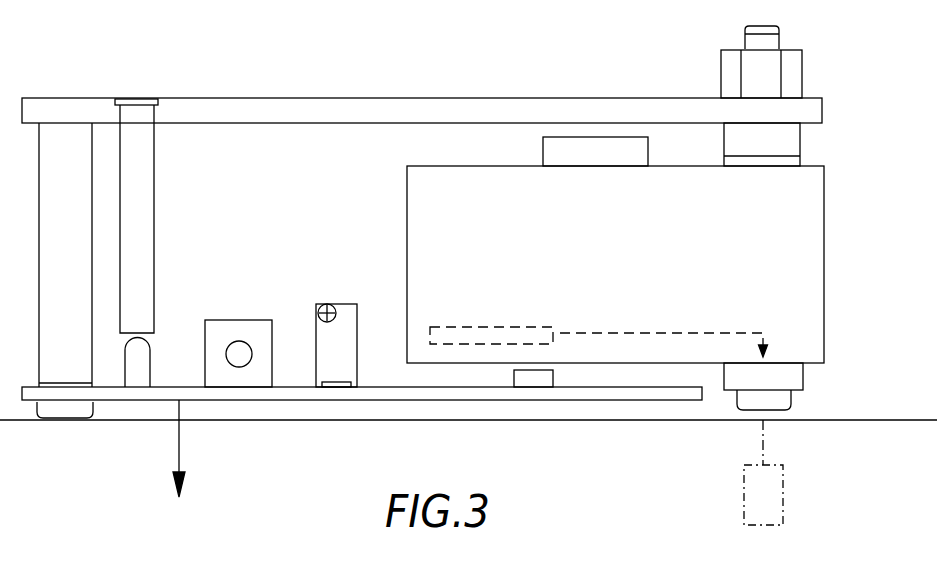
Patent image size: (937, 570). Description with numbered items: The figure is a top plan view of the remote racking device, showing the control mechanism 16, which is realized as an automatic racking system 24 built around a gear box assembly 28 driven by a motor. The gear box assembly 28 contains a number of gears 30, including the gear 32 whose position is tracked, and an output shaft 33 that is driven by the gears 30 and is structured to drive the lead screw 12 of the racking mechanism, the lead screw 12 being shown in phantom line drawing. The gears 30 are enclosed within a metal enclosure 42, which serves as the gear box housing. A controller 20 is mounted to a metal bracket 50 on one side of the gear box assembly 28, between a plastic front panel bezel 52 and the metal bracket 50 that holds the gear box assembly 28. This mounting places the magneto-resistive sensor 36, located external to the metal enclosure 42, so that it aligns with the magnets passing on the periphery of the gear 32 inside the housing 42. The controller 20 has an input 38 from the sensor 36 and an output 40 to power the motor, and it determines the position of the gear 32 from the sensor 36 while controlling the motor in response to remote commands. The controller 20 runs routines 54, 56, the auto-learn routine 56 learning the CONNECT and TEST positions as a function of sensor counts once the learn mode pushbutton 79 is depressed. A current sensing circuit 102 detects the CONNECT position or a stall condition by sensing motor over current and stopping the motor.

The lead screw 12 is at (775, 508).
The control mechanism 16 is at (422, 252).
The controller 20 is at (368, 426).
The automatic racking system 24 is at (877, 347).
The gear box assembly 28 is at (647, 250).
The gears 30 is at (565, 292).
The gear 32 is at (531, 326).
The output shaft 33 is at (780, 410).
The sensor 36 is at (525, 380).
The input 38 is at (548, 398).
The output 40 is at (177, 447).
The metal enclosure 42 is at (642, 250).
The metal bracket 50 is at (255, 103).
The plastic front panel bezel 52 is at (105, 418).
The routine 54 is at (368, 424).
The auto-learn routine 56 is at (647, 395).
The learn mode pushbutton 79 is at (240, 320).
The current sensing circuit 102 is at (316, 284).